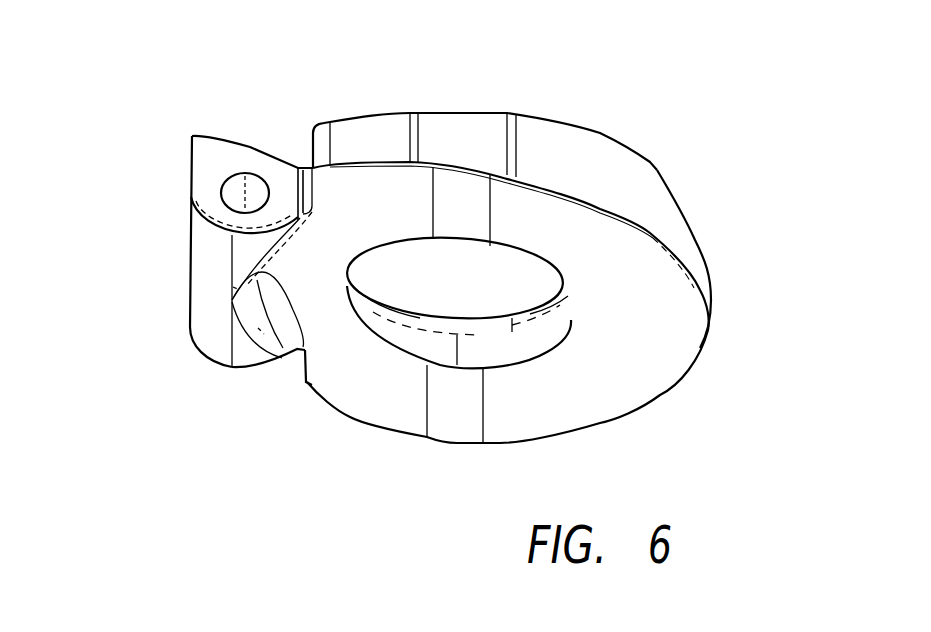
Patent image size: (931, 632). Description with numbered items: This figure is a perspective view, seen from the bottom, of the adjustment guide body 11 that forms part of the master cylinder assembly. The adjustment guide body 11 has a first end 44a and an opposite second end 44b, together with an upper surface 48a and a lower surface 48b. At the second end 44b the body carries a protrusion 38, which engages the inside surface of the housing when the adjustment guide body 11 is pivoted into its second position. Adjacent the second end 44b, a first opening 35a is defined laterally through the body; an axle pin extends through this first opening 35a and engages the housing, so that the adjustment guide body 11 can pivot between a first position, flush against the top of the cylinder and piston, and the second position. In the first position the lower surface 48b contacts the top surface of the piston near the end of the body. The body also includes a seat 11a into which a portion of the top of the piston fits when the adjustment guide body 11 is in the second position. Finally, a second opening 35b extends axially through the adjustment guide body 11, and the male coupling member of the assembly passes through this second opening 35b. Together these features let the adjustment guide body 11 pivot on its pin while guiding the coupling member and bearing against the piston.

The adjustment guide body 11 is at (451, 241).
The seat 11a is at (310, 382).
The first opening 35a is at (250, 190).
The second opening 35b is at (474, 287).
The protrusion 38 is at (197, 201).
The first end 44a is at (697, 243).
The second end 44b is at (195, 268).
The upper surface 48a is at (578, 146).
The lower surface 48b is at (593, 398).